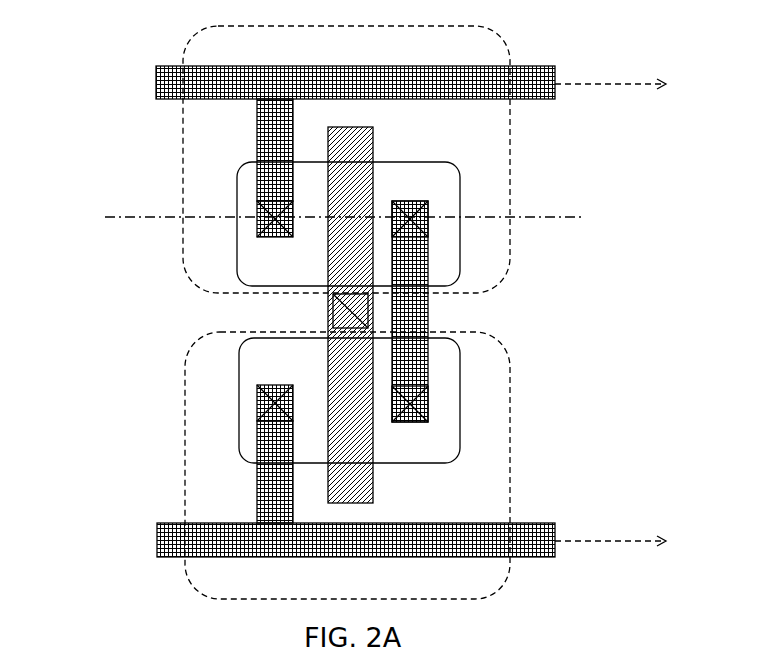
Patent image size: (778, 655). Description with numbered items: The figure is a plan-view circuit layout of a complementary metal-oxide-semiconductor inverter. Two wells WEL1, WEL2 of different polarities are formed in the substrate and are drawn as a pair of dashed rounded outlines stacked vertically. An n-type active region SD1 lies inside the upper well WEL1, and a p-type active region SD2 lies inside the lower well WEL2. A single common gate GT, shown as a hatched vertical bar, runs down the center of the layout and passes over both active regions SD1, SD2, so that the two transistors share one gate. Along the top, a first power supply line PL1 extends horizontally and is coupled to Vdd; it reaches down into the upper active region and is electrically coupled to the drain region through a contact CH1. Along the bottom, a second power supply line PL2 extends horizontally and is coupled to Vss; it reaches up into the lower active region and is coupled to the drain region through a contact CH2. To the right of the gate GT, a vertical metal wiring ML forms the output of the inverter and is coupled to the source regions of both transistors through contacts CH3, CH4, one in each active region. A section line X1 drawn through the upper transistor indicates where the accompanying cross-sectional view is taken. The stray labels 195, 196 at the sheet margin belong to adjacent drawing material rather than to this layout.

The first power supply line PL1 is at (190, 94).
The second power supply line PL2 is at (230, 527).
The common gate GT is at (362, 198).
The metal wiring ML is at (428, 310).
The contact CH1 is at (273, 218).
The contact CH2 is at (265, 407).
The contact CH3 is at (418, 226).
The contact CH4 is at (428, 408).
The n-type active region SD1 is at (237, 271).
The p-type active region SD2 is at (240, 352).
The well WEL1 is at (510, 192).
The well WEL2 is at (510, 395).
The section line X1- X1 is at (340, 216).
The element Vdd is at (636, 84).
The element Vss is at (634, 542).
The label (adjacent figure) 195 is at (19, 649).
The metal line label (adjacent figure) 196 is at (609, 654).